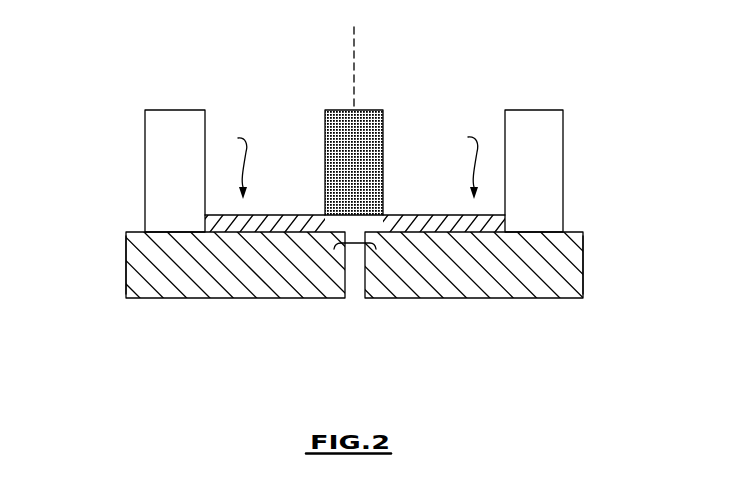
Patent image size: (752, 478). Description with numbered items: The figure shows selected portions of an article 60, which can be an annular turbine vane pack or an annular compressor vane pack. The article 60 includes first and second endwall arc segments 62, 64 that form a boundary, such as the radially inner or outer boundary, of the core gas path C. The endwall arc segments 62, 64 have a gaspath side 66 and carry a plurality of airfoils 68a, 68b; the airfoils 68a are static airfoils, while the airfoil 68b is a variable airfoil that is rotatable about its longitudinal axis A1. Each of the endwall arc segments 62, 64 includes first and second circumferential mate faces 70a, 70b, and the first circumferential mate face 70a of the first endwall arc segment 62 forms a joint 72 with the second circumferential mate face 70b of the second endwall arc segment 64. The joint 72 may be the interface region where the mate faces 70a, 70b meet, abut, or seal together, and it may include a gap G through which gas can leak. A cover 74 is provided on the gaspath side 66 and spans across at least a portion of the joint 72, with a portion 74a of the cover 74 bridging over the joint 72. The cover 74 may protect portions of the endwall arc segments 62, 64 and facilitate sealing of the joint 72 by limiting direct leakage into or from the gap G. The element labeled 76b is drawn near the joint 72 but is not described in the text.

The article 60 is at (245, 86).
The longitudinal axis A1 is at (353, 48).
The first endwall arc segment 62 is at (218, 312).
The second endwall arc segment 64 is at (532, 312).
The gaspath side 66 is at (344, 161).
The static airfoils 68a is at (145, 132).
The variable airfoil 68b is at (383, 125).
The first circumferential mate face 70a is at (583, 275).
The second circumferential mate face 70b is at (126, 288).
The joint 72 is at (359, 321).
The cover 74 is at (304, 203).
The portion of the cover 74a is at (347, 246).
The rib 76b is at (358, 260).
The gap G is at (358, 262).
The core gas path C is at (259, 175).